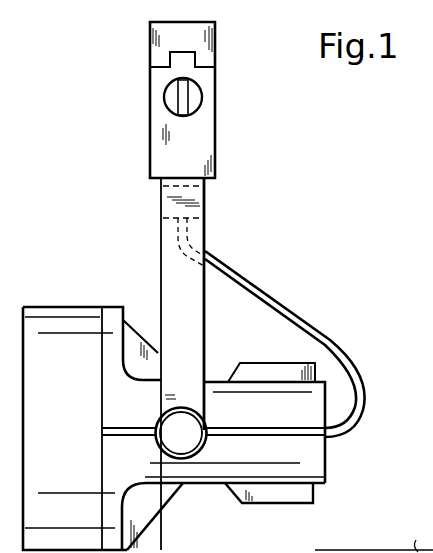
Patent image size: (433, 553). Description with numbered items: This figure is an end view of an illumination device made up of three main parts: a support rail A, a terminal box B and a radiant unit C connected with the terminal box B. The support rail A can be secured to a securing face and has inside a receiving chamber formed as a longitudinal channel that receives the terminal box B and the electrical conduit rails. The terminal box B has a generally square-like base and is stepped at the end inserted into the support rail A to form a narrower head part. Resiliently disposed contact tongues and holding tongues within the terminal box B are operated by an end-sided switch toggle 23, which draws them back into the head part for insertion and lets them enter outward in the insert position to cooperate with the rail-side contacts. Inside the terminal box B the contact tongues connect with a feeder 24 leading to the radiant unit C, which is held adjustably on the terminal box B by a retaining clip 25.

The support rail A is at (216, 48).
The terminal box B is at (150, 140).
The radiant unit C is at (62, 307).
The switch toggle 23 is at (197, 97).
The feeder 24 is at (246, 271).
The retaining clip 25 is at (172, 278).